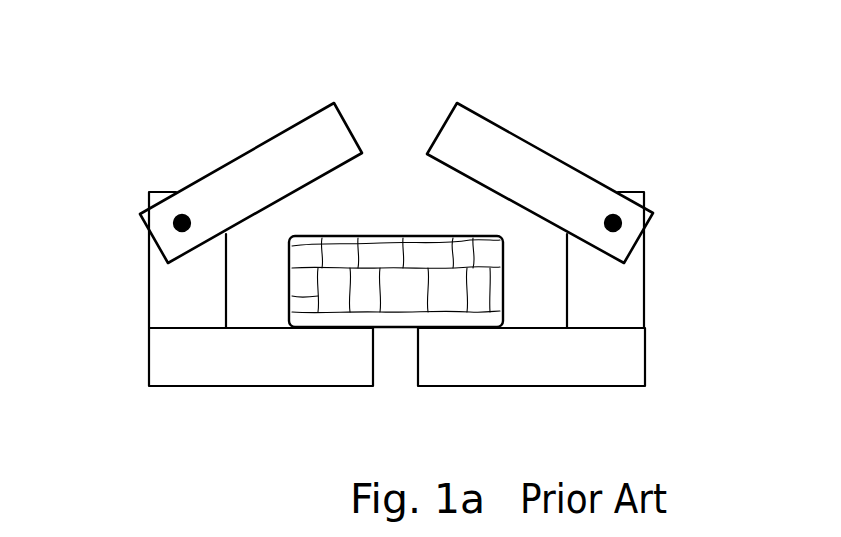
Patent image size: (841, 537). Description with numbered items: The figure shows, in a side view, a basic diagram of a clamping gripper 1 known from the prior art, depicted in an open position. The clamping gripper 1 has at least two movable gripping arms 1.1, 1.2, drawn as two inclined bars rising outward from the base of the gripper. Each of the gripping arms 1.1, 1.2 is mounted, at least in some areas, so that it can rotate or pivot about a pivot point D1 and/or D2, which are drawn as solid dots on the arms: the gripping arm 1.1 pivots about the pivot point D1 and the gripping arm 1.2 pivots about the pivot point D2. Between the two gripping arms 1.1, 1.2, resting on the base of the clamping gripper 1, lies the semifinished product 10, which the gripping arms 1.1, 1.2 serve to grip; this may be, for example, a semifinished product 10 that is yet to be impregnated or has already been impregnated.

The clamping gripper 1 is at (146, 153).
The gripping arm 1.1 is at (547, 183).
The gripping arm 1.2 is at (275, 170).
The semifinished product 10 is at (422, 250).
The pivot point D1 is at (616, 215).
The pivot point D2 is at (173, 222).